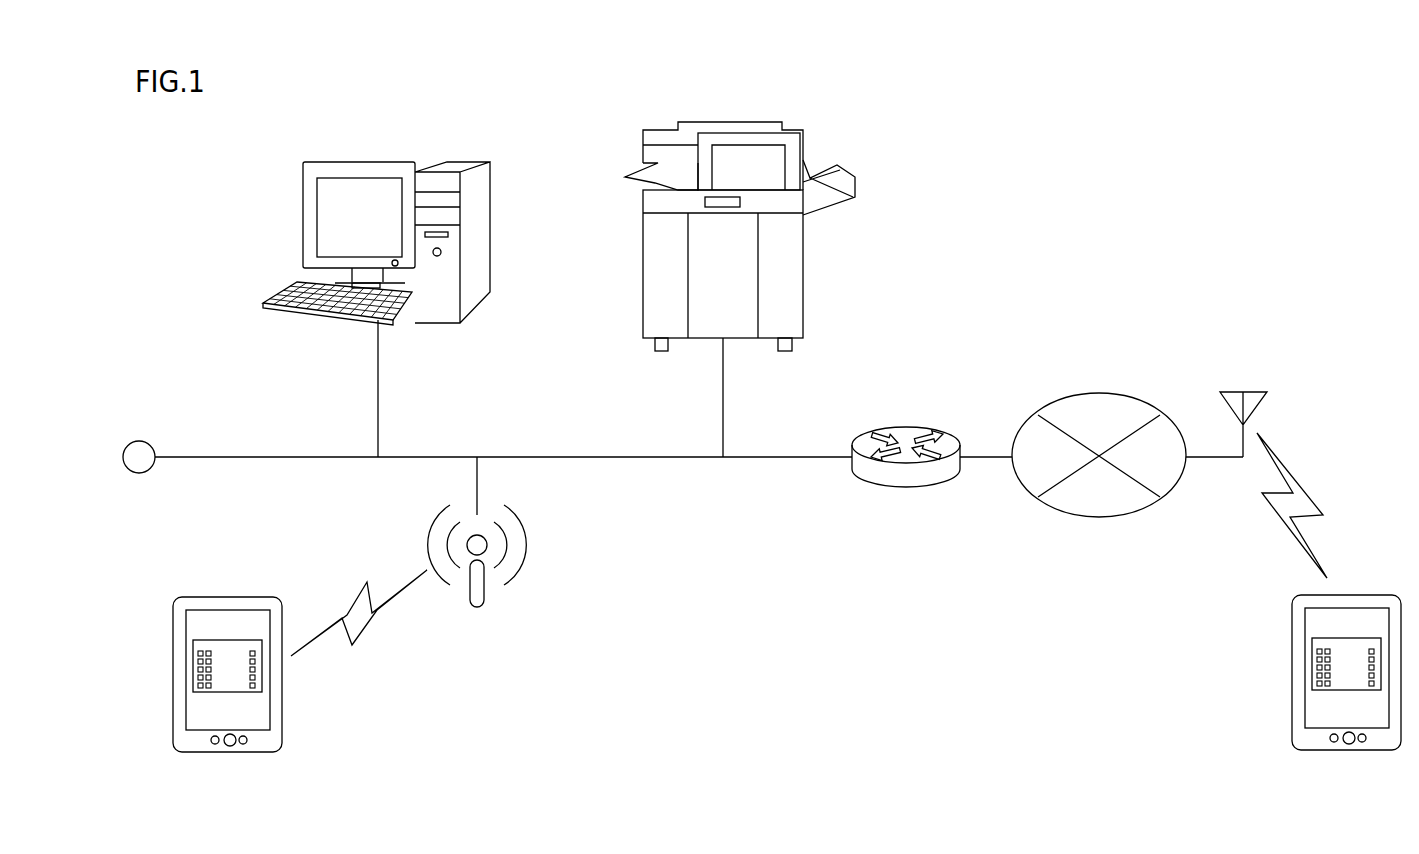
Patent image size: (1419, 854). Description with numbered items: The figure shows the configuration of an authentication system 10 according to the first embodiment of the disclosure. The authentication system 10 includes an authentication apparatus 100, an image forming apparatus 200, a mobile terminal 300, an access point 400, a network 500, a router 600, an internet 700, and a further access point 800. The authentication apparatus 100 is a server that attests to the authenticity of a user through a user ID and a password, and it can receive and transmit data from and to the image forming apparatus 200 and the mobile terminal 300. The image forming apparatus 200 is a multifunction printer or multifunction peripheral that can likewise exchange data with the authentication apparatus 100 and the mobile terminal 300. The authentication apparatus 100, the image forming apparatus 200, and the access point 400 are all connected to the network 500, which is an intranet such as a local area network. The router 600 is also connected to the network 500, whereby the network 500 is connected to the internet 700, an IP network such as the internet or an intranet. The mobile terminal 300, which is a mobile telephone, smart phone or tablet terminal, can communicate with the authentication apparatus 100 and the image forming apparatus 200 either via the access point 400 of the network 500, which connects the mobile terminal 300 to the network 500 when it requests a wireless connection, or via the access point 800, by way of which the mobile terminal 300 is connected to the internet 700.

The authentication system 10 is at (780, 808).
The authentication apparatus 100 is at (463, 162).
The image forming apparatus 200 is at (727, 122).
The mobile terminal 300 is at (247, 596).
The access point 400 is at (515, 520).
The network 500 is at (607, 455).
The router 600 is at (915, 425).
The internet 700 is at (1102, 393).
The access point 800 is at (1254, 389).